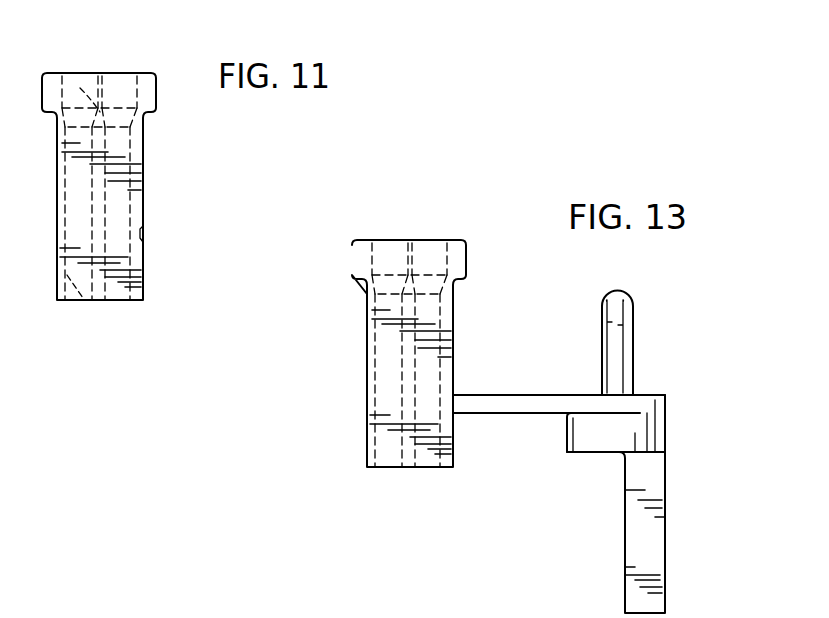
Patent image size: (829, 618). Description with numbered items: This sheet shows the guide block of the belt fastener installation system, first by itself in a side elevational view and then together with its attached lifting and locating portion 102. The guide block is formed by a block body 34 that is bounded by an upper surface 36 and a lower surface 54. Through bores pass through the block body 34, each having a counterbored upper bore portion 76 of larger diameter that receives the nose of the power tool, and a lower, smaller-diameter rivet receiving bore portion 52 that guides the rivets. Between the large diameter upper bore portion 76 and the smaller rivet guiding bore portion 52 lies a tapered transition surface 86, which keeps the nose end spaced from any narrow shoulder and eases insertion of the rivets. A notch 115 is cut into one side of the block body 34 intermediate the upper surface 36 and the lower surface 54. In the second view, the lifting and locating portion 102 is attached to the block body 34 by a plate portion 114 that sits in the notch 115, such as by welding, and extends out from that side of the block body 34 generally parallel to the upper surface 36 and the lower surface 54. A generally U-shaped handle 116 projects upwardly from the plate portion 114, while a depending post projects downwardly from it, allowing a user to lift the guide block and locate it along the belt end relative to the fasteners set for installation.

In FIG. 11, the block body 34 is at (137, 165).
In FIG. 13, the block body 34 is at (368, 330).
In FIG. 11, the upper bore portion 76 is at (125, 87).
In FIG. 11, the transition surface 86 is at (78, 84).
In FIG. 11, the notch 115 is at (140, 233).
In FIG. 11, the rivet receiving bore portion 52 is at (85, 303).
In FIG. 13, the upper surface 36 is at (457, 238).
In FIG. 13, the lower surface 54 is at (440, 468).
In FIG. 13, the plate portion 114 is at (512, 402).
In FIG. 13, the handle 116 is at (627, 336).
In FIG. 13, the lifting and locating portion 102 is at (713, 375).